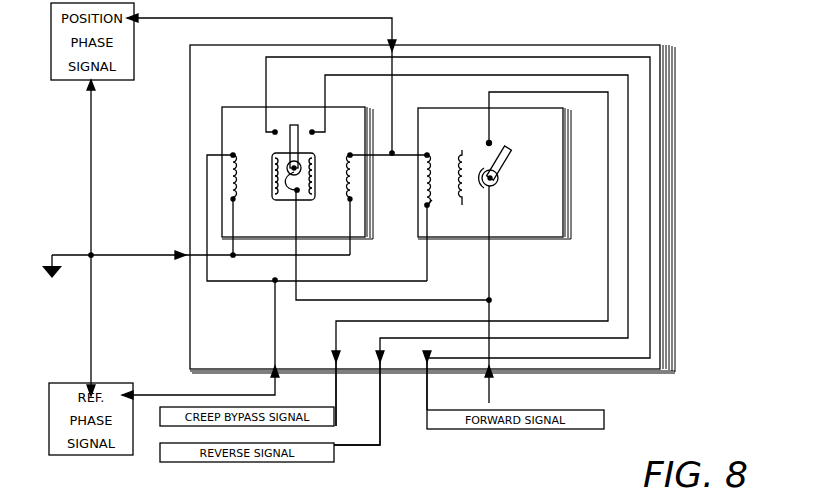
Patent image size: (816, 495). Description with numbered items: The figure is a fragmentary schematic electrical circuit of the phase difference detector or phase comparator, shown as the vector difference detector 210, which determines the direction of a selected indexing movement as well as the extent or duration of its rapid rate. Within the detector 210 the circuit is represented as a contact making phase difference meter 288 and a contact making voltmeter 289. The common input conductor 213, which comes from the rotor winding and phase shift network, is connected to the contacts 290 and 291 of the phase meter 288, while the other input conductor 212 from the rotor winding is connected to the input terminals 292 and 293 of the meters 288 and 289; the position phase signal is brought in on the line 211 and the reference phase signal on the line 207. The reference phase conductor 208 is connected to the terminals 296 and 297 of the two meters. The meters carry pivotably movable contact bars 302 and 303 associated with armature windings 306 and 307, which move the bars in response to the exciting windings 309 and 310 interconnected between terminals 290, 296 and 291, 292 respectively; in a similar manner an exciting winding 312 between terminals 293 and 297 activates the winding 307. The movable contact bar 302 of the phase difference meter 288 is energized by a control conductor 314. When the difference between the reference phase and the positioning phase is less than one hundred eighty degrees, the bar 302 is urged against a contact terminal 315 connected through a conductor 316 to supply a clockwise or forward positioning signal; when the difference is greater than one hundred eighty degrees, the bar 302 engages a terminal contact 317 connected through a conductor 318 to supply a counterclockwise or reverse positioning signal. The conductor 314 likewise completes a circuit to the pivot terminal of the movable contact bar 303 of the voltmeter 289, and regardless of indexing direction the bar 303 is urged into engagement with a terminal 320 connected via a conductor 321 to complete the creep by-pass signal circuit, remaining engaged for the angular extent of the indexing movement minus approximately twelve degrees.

The reference phase signal line 207 is at (92, 331).
The reference phase conductor 208 is at (264, 396).
The vector difference detector 210 is at (504, 44).
The position phase signal line 211 is at (92, 153).
The input conductor 212 is at (393, 18).
The common input conductor 213 is at (118, 254).
The contact making phase difference meter 288 is at (258, 110).
The contact making voltmeter 289 is at (572, 197).
The contact 290 is at (234, 209).
The contact 291 is at (350, 210).
The input terminal 292 is at (362, 144).
The input terminal 293 is at (424, 153).
The terminal 296 is at (225, 154).
The terminal 297 is at (426, 207).
The movable contact bar 302 is at (296, 127).
The movable contact bar 303 is at (505, 157).
The armature winding 306 is at (312, 200).
The armature winding 307 is at (470, 143).
The exciting winding 309 is at (237, 172).
The exciting winding 310 is at (347, 173).
The exciting winding 312 is at (432, 204).
The control conductor 314 is at (493, 385).
The contact terminal 315 is at (276, 129).
The conductor 316 is at (431, 385).
The terminal contact 317 is at (316, 131).
The conductor 318 is at (381, 418).
The terminal 320 is at (491, 142).
The conductor 321 is at (340, 385).